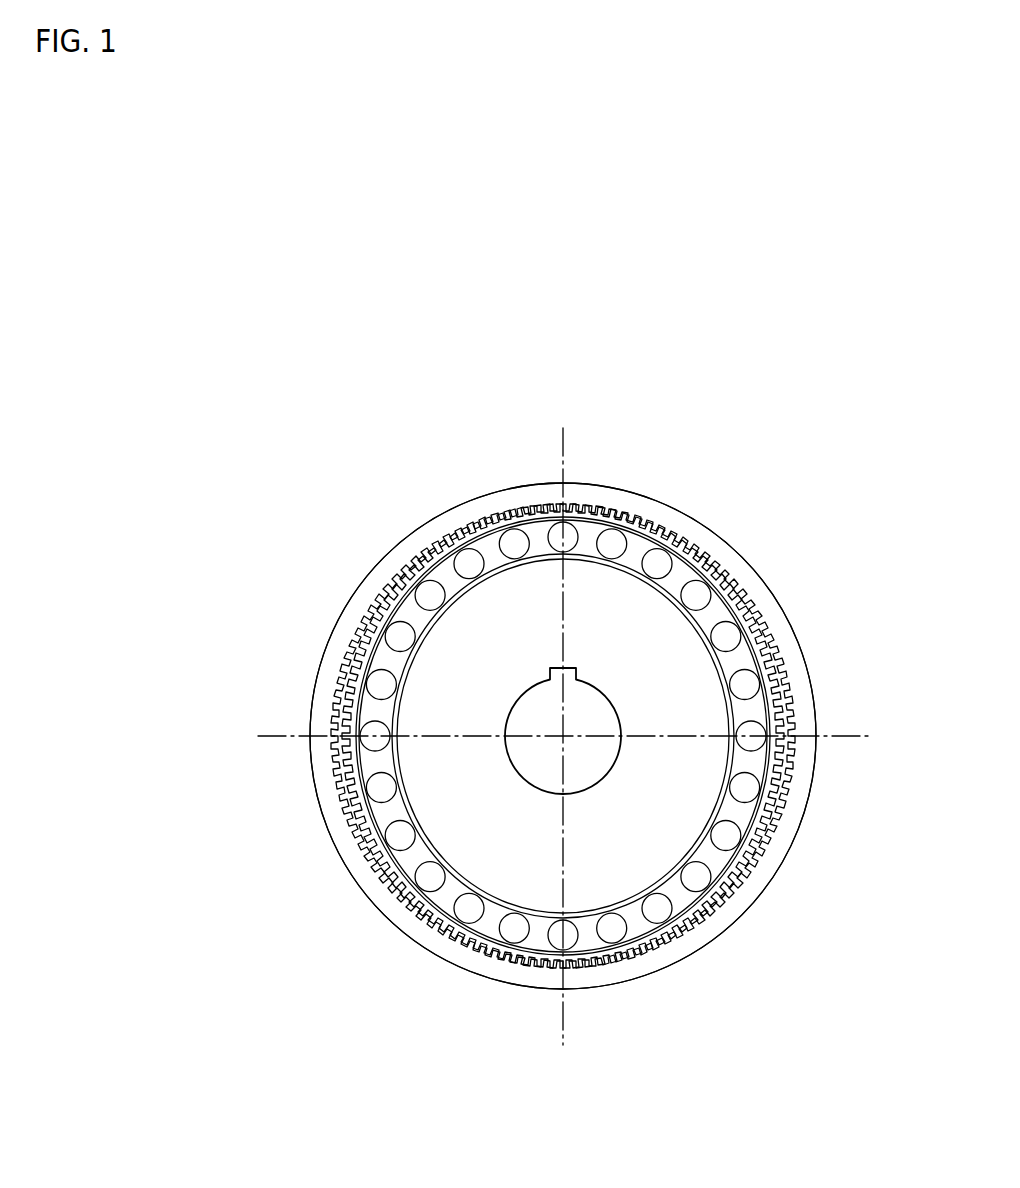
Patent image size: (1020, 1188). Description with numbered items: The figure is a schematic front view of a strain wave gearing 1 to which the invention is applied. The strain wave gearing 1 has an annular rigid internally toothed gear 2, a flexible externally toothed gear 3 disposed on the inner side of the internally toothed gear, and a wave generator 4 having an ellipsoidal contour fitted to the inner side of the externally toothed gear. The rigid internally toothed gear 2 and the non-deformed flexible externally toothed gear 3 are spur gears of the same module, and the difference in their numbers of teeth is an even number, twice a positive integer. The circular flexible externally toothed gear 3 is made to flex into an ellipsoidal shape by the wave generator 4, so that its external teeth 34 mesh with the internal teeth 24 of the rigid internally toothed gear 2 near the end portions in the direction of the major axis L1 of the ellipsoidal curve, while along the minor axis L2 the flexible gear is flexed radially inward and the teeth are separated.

The strain wave gearing 1 is at (754, 484).
The rigid internally toothed gear 2 is at (598, 736).
The internal teeth 24 is at (742, 592).
The flexible externally toothed gear 3 is at (626, 736).
The external teeth 34 is at (755, 610).
The wave generator 4 is at (712, 755).
The major axis L1 is at (563, 625).
The minor axis L2 is at (450, 737).